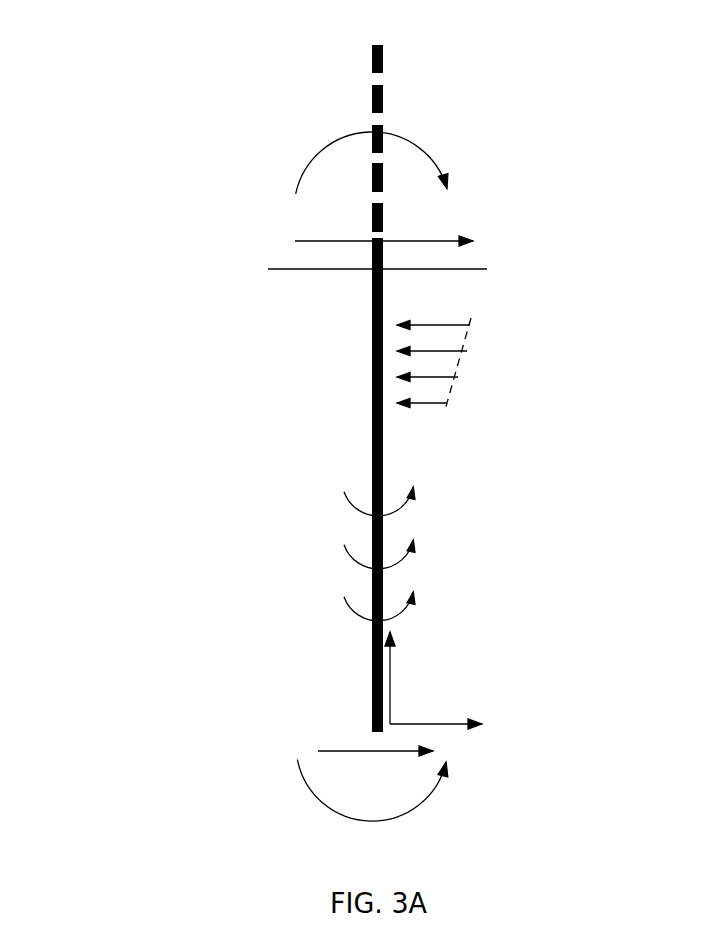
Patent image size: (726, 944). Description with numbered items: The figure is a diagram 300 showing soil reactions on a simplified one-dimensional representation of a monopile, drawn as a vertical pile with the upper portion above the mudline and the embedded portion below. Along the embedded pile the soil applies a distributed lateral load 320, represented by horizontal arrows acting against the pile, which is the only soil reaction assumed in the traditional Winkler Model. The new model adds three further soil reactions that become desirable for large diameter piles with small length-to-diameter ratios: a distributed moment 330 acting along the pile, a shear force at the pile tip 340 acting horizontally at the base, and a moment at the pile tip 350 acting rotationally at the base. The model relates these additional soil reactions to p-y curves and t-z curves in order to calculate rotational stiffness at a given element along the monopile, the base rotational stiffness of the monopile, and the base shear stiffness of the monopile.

The diagram 300 is at (546, 62).
The distributed lateral load 320 is at (595, 409).
The distributed moment 330 is at (542, 602).
The shear force at the pile tip 340 is at (270, 730).
The moment at the pile tip 350 is at (568, 825).